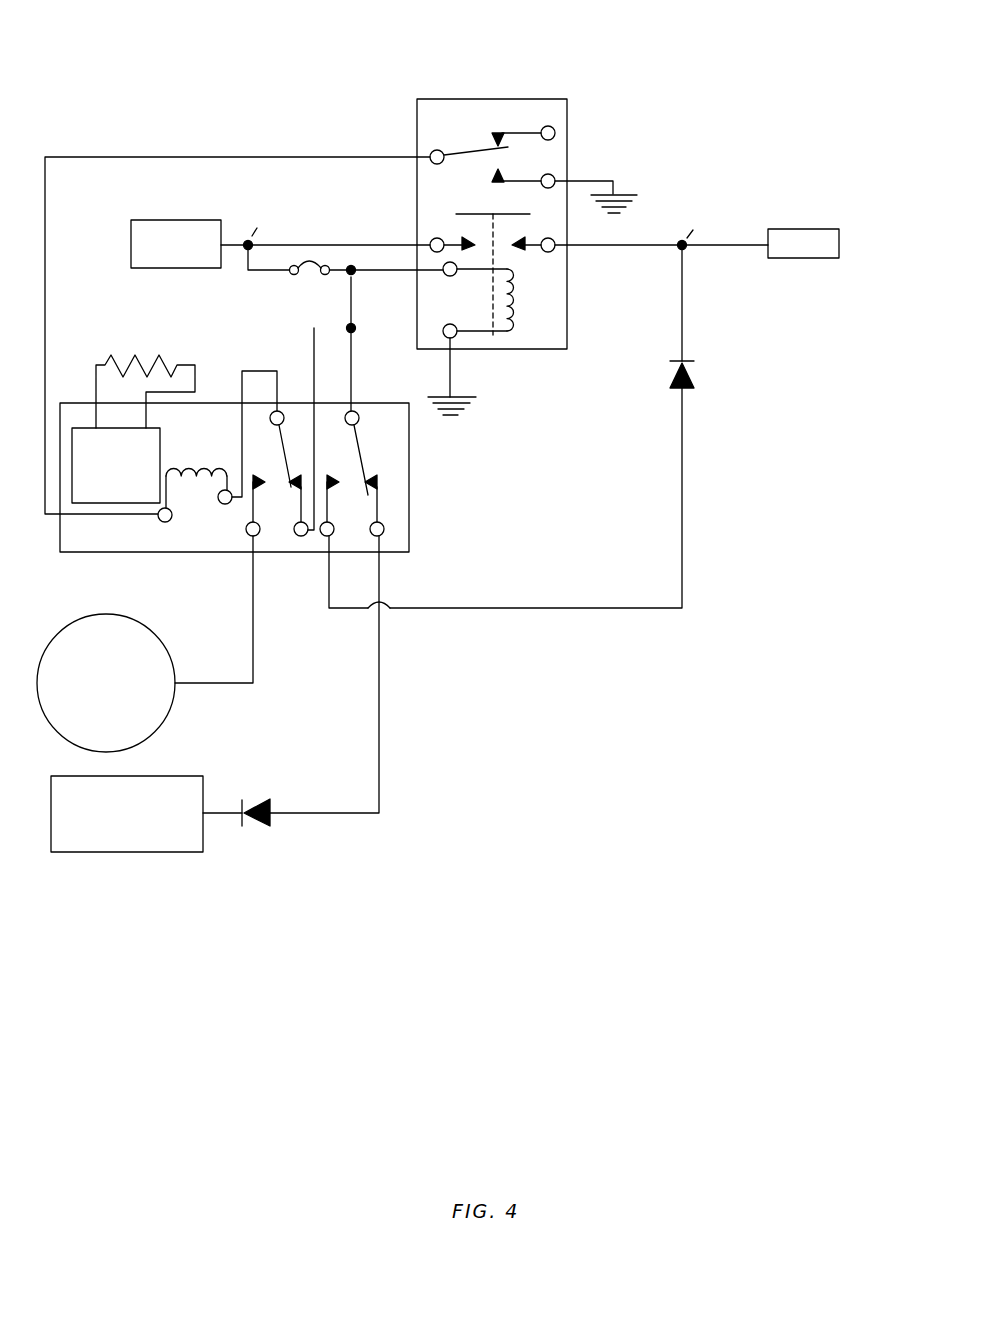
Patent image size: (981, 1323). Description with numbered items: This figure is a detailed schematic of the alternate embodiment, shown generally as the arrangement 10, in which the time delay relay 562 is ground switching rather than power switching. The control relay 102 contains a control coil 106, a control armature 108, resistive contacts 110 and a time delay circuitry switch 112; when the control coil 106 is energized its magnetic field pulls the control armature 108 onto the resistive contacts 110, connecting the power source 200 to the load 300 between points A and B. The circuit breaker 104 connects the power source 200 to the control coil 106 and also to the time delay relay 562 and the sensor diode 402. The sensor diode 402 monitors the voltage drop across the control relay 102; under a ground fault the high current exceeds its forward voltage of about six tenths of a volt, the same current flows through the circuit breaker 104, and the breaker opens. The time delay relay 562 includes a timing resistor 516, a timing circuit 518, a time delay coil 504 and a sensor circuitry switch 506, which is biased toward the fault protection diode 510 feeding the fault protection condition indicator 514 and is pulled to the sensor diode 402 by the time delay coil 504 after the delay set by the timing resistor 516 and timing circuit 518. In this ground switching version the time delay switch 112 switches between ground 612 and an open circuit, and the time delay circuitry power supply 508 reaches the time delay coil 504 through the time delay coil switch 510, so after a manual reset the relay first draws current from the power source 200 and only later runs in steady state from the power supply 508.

The electrical system 10 is at (605, 46).
The control relay 102 is at (536, 100).
The circuit breaker 104 is at (320, 266).
The control coil 106 is at (520, 302).
The control armature 108 is at (489, 215).
The resistive contacts 110 is at (466, 241).
The time delay circuitry switch 112 is at (457, 148).
The power source 200 is at (180, 221).
The load 300 is at (793, 227).
The sensor diode 402 is at (694, 361).
The time delay coil 504 is at (179, 469).
The sensor circuitry switch 506 is at (356, 457).
The time delay circuitry power supply 508 is at (135, 621).
The fault protection diode / time delay coil switch 510 is at (281, 456).
The fault protection condition indicator 514 is at (104, 855).
The timing resistor 516 is at (128, 358).
The timing circuit 518 is at (153, 433).
The time delay relay 562 is at (365, 400).
The ground 612 is at (599, 185).